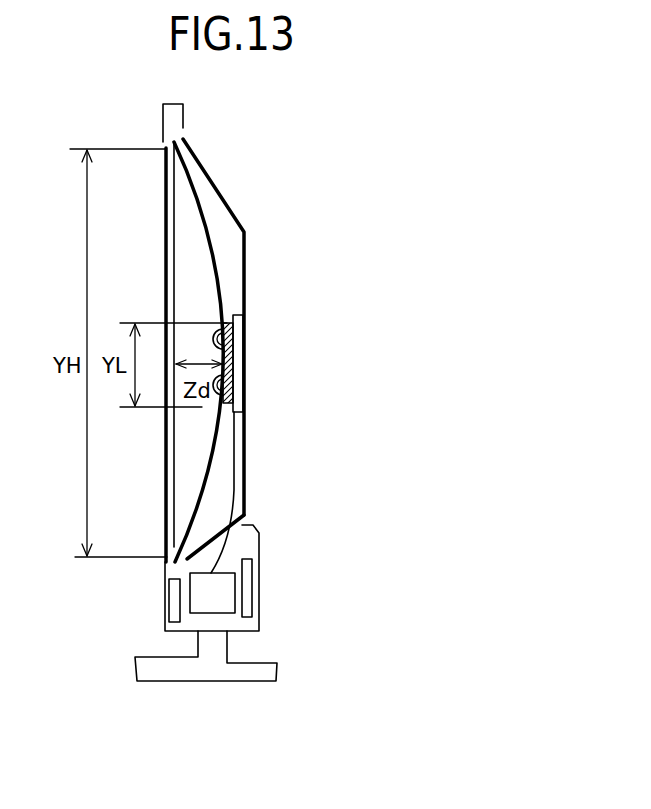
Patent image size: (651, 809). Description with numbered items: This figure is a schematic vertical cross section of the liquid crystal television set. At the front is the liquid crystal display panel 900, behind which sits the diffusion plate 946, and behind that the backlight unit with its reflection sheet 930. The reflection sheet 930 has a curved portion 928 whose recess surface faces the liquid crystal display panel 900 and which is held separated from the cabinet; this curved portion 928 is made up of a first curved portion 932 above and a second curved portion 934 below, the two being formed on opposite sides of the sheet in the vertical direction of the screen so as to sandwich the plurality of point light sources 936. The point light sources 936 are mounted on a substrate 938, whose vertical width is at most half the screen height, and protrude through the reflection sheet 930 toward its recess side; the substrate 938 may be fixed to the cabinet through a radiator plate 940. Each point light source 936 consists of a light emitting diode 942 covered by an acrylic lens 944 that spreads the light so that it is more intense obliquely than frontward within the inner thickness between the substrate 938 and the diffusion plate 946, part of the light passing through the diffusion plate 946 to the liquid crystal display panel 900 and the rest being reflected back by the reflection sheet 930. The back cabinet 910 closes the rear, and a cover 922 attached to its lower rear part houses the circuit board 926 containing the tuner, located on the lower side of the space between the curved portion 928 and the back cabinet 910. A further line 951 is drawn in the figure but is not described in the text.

The liquid crystal display panel 900 is at (174, 196).
The diffusion plate 946 is at (174, 227).
The reflection sheet 930 is at (213, 254).
The back cabinet 910 is at (244, 445).
The curved portion 928 is at (344, 414).
The first curved portion 932 is at (215, 272).
The second curved portion 934 is at (207, 473).
The point light sources 936 is at (310, 362).
The radiator plate 940 is at (238, 332).
The substrate 938 is at (230, 350).
The lens 944 is at (218, 387).
The light emitting diode 942 is at (227, 389).
The cable 951 is at (235, 492).
The cover 922 is at (246, 636).
The circuit board 926 is at (191, 623).